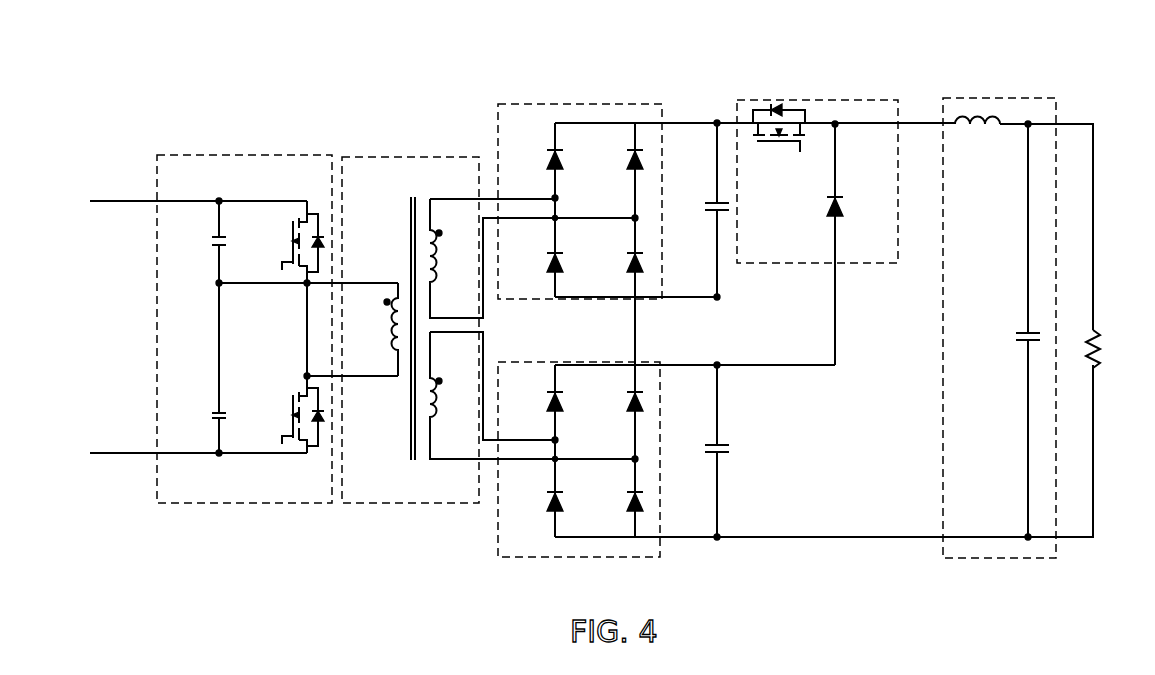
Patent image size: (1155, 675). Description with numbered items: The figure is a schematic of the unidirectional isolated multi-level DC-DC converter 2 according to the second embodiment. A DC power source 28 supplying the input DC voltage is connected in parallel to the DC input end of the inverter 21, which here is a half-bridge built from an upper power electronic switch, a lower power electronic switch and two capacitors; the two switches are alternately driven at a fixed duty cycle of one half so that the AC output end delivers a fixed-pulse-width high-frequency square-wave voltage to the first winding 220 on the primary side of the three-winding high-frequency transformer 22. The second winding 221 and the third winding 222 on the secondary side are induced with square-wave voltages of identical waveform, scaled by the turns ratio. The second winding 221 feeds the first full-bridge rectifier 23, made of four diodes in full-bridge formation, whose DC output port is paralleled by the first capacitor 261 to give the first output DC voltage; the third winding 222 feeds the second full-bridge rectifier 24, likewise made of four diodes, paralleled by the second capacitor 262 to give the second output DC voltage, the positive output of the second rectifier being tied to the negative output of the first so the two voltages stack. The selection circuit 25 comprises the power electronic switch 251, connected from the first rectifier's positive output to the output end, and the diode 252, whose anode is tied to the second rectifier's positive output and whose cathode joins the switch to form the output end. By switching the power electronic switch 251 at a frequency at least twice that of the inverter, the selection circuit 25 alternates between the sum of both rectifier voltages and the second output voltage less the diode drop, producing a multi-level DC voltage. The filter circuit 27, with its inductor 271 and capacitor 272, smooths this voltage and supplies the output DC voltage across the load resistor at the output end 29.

The unidirectional isolated multi-level DC-DC converter 2 is at (428, 78).
The inverter 21 is at (254, 155).
The 3-winding high-frequency transformer 22 is at (436, 157).
The first full-bridge rectifier 23 is at (590, 104).
The second full-bridge rectifier 24 is at (580, 557).
The selection circuit 25 is at (820, 100).
The filter circuit 27 is at (1010, 98).
The DC power source 28 is at (100, 300).
The output end 29 is at (1124, 296).
The first winding 220 is at (378, 352).
The second winding 221 is at (452, 270).
The third winding 222 is at (452, 408).
The power electronic switch 251 is at (763, 188).
The diode 252 is at (840, 194).
The first capacitor 261 is at (727, 267).
The second capacitor 262 is at (730, 437).
The inductor 271 is at (982, 172).
The capacitor 272 is at (998, 368).